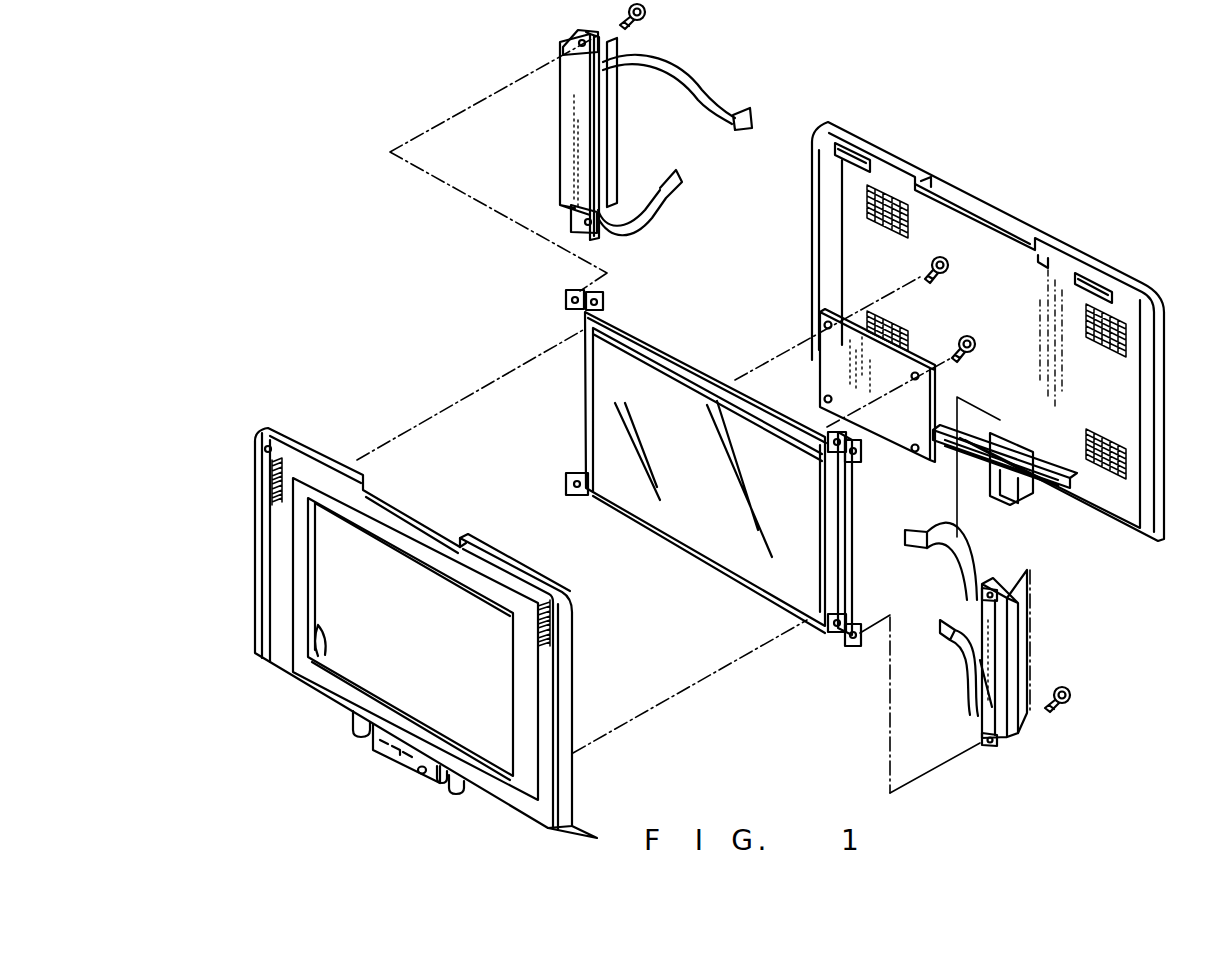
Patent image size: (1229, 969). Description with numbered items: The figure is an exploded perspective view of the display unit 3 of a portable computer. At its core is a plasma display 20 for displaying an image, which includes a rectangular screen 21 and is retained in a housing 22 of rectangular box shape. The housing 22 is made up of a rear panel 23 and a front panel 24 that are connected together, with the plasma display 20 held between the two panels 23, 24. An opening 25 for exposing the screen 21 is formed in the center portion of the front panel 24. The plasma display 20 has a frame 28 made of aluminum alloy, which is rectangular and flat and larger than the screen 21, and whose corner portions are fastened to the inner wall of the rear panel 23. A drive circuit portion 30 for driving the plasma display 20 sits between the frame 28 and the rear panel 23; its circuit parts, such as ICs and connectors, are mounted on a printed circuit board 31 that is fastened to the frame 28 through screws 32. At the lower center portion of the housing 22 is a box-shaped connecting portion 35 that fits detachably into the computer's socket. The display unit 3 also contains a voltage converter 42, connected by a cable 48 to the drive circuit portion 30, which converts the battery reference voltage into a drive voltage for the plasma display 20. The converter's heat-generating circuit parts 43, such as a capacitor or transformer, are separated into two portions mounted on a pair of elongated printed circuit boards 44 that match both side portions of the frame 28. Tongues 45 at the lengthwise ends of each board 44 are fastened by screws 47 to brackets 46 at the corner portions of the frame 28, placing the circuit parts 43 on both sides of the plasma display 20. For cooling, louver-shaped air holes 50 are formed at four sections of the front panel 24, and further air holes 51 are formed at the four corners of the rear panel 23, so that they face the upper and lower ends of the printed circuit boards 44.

The display unit 3 is at (238, 576).
The plasma display 20 is at (663, 515).
The screen 21 is at (697, 395).
The housing 22 is at (555, 768).
The rear panel 23 is at (1162, 356).
The front panel 24 is at (495, 562).
The opening 25 is at (323, 634).
The frame 28 is at (840, 552).
The drive circuit portion 30 is at (836, 305).
The printed circuit board 31 is at (822, 385).
The screws 32 is at (950, 266).
The connecting portion 35 is at (392, 770).
The voltage converter 42 is at (612, 150).
The circuit parts 43 is at (600, 105).
The printed circuit boards 44 is at (575, 140).
The tongues 45 is at (565, 38).
The brackets 46 is at (565, 292).
The screws 47 is at (648, 16).
The cable 48 is at (713, 88).
The air holes 50 is at (271, 488).
The air holes 51 is at (898, 212).